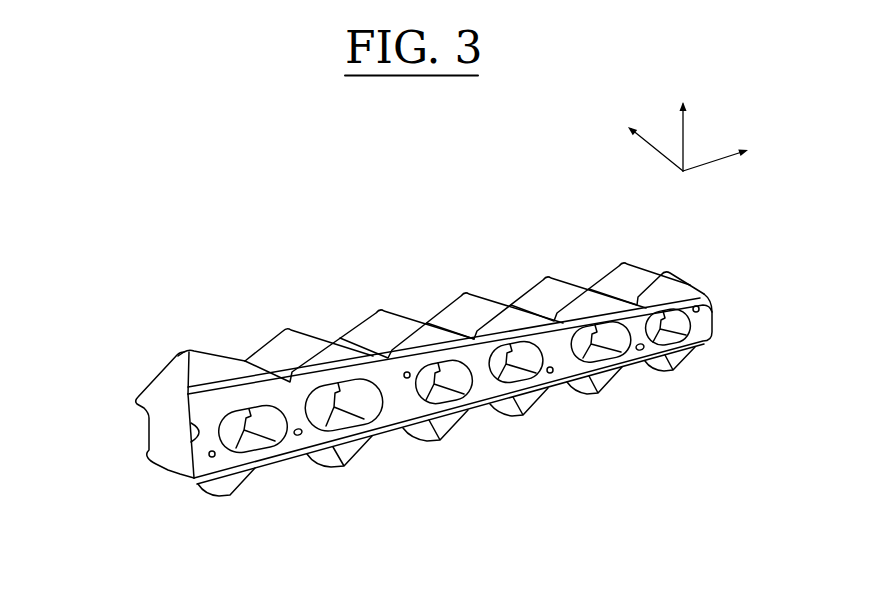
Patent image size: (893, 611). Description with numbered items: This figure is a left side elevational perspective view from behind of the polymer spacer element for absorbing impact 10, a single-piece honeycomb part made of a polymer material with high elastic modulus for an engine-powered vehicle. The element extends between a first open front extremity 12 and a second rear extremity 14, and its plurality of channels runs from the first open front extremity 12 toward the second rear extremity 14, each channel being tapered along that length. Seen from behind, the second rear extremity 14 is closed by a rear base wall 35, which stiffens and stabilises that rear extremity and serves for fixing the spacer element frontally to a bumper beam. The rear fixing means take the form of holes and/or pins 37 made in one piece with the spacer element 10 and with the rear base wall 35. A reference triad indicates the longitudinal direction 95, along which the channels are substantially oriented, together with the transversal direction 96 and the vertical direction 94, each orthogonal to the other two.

The polymer spacer element for absorbing impact 10 is at (100, 239).
The first open front extremity 12 is at (140, 398).
The second rear extremity 14 is at (180, 415).
The rear base wall 35 is at (198, 440).
The holes and/or pins 37 is at (212, 455).
The vertical direction 94 is at (704, 133).
The longitudinal direction 95 is at (642, 134).
The transversal direction 96 is at (737, 149).